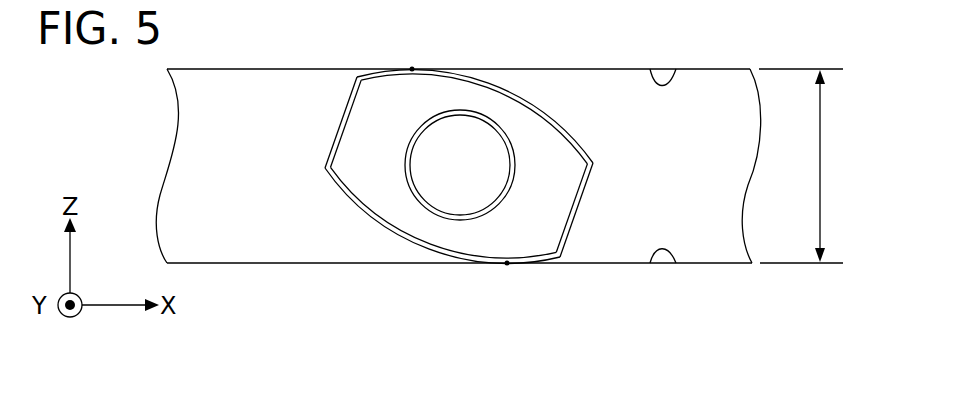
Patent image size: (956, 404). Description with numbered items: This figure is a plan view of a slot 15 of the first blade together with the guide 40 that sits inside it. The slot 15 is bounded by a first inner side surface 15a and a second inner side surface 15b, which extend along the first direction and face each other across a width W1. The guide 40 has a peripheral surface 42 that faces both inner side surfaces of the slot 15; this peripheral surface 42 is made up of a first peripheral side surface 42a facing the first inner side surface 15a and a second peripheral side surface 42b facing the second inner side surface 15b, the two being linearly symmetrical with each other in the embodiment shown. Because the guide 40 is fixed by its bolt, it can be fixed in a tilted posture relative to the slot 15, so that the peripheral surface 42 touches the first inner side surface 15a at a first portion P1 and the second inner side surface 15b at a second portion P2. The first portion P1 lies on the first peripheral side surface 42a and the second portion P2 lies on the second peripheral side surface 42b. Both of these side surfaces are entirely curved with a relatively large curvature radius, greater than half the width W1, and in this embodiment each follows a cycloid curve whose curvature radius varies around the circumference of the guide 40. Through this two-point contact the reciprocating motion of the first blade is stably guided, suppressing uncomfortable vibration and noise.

The slot 15 is at (768, 52).
The first inner side surface 15a is at (674, 74).
The second inner side surface 15b is at (674, 263).
The guide 40 is at (357, 181).
The peripheral surface 42 is at (447, 181).
The first peripheral side surface 42a is at (524, 96).
The second peripheral side surface 42b is at (388, 228).
The first portion P1 is at (412, 68).
The second portion P2 is at (507, 266).
The width W1 is at (840, 166).